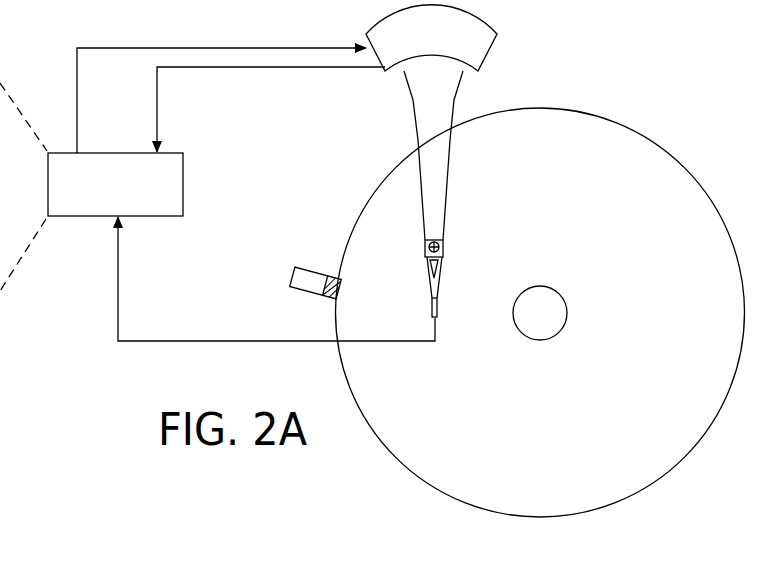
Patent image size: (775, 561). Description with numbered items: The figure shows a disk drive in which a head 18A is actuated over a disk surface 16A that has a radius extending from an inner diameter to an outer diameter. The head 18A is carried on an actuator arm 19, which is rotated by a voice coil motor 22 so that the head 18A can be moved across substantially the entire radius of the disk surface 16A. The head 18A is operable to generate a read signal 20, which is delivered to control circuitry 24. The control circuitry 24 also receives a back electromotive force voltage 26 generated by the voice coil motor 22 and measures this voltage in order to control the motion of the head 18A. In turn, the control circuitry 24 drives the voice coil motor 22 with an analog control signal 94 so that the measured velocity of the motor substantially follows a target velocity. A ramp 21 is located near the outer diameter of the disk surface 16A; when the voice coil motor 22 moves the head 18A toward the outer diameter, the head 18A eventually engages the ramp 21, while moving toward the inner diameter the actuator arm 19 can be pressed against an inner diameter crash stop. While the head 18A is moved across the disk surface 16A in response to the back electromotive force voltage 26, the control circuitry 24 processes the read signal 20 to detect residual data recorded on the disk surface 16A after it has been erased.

The disk surface 16A is at (680, 152).
The head 18A is at (430, 308).
The actuator arm 19 is at (417, 136).
The read signal 20 is at (228, 341).
The ramp 21 is at (293, 277).
The voice coil motor 22 is at (490, 53).
The control circuitry 24 is at (116, 153).
The back electromotive force voltage 26 is at (157, 110).
The analog control signal 94 is at (75, 50).